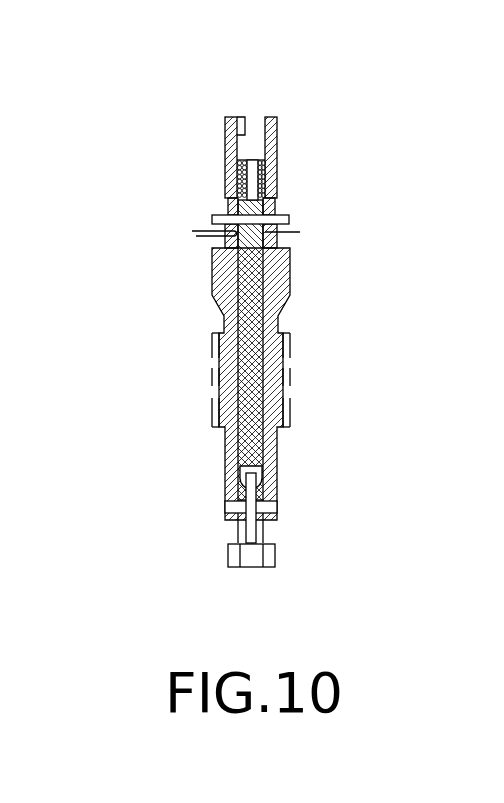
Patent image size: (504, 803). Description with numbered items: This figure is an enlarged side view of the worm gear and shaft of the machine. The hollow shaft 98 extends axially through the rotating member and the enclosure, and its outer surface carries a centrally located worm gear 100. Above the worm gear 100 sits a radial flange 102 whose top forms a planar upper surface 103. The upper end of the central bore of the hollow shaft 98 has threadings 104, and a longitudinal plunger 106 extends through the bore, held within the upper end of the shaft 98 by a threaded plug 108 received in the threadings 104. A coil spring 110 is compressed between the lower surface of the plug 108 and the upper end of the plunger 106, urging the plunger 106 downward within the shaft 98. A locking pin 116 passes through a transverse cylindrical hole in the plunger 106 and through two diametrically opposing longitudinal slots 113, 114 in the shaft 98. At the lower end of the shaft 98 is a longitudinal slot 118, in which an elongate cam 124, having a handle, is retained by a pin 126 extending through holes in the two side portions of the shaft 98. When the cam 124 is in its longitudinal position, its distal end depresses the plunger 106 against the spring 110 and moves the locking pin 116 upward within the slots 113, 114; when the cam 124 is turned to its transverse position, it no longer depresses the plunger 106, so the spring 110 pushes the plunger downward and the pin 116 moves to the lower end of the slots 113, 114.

The hollow shaft 98 is at (282, 448).
The worm gear 100 is at (283, 378).
The radial flange 102 is at (290, 272).
The planar upper surface 103 is at (290, 243).
The threadings 104 is at (213, 106).
The longitudinal plunger 106 is at (238, 377).
The threaded plug 108 is at (252, 117).
The coil spring 110 is at (262, 178).
The longitudinal slot 113 is at (192, 231).
The longitudinal slot 114 is at (300, 232).
The locking pin 116 is at (212, 218).
The longitudinal slot 118 is at (243, 501).
The elongate cam 124 is at (240, 530).
The pin 126 is at (277, 503).